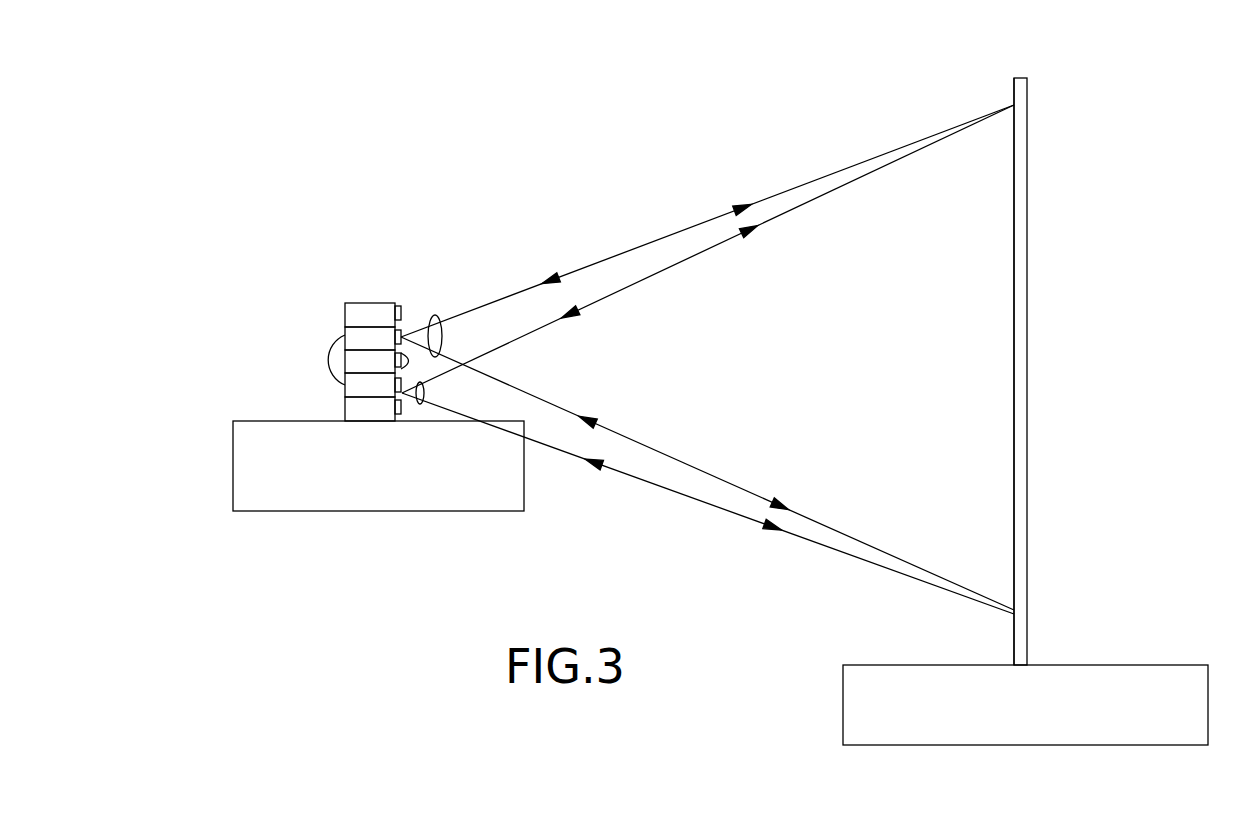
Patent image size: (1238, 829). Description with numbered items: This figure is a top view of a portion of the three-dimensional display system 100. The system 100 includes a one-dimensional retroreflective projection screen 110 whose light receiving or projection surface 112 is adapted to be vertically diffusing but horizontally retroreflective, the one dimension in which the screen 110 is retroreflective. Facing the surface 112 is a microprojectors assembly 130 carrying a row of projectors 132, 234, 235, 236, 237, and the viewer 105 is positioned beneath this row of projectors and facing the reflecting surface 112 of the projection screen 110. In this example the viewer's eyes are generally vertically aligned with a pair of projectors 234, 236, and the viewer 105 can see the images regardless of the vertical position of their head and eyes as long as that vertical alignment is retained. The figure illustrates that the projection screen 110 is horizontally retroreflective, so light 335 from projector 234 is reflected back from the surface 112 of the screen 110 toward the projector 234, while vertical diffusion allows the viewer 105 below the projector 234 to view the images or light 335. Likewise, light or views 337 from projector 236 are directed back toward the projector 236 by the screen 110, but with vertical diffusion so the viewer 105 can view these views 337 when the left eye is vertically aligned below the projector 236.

The 3D display system 100 is at (275, 228).
The viewer 105 is at (331, 345).
The 1D retroreflective projection screen 110 is at (1062, 80).
The projection surface 112 is at (1013, 92).
The microprojectors assembly 130 is at (251, 512).
The projector 132 is at (345, 412).
The projector 234 is at (344, 383).
The projector 235 is at (441, 358).
The projector 236 is at (353, 336).
The projector 237 is at (356, 302).
The light 335 is at (425, 393).
The light 337 is at (436, 314).